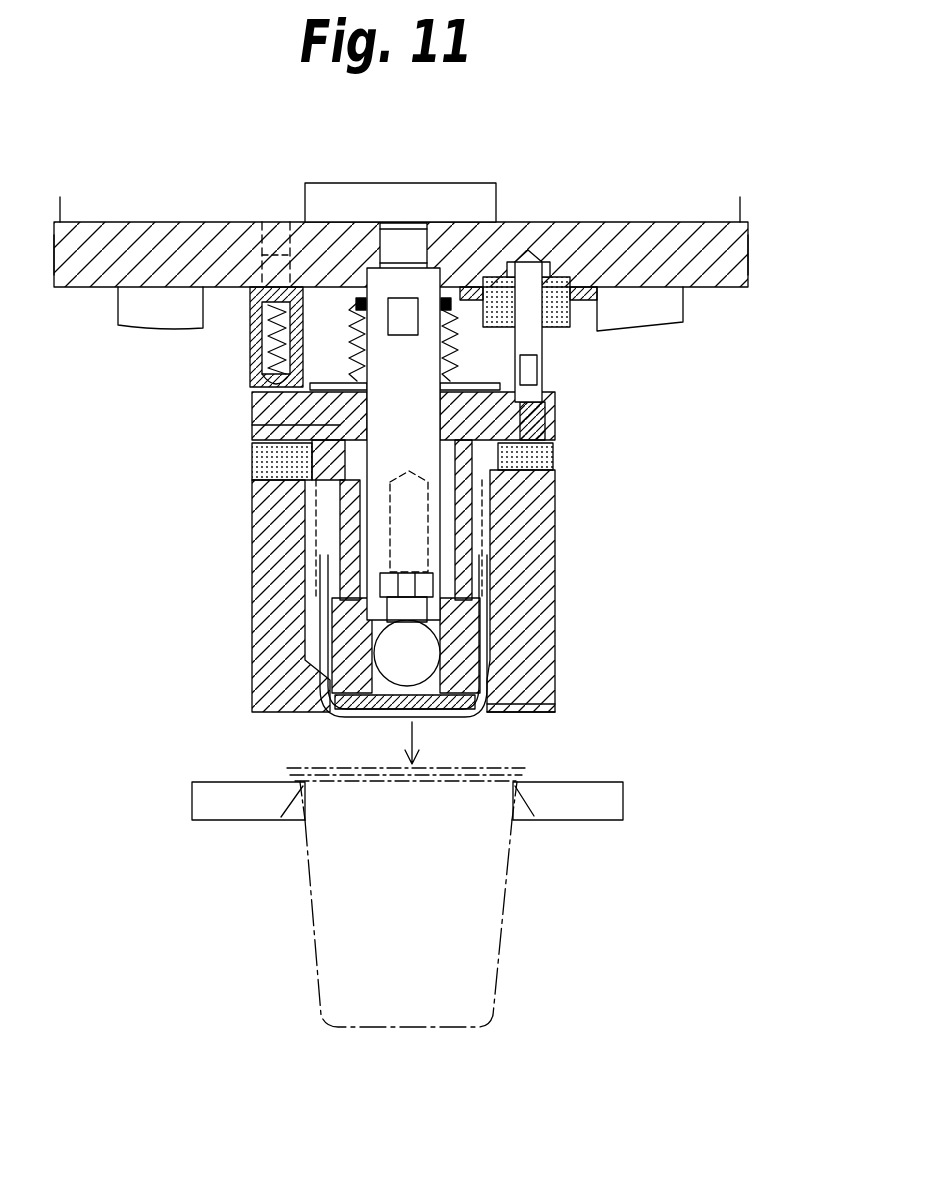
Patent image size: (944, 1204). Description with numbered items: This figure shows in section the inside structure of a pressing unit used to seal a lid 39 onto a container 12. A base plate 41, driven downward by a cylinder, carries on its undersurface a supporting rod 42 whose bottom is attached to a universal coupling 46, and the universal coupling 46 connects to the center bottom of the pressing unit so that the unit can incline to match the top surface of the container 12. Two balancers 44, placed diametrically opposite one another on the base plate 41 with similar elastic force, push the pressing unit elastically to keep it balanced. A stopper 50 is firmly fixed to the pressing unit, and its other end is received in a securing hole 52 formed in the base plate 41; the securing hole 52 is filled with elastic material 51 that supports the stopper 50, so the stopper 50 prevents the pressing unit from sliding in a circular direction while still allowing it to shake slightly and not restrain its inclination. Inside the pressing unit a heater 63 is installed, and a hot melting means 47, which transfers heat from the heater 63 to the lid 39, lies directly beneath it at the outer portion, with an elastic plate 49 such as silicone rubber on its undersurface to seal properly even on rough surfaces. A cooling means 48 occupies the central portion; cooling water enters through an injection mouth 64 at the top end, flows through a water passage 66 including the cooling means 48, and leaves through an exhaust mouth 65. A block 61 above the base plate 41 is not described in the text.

The container 12 is at (480, 933).
The lid 39 is at (297, 765).
The base plate 41 is at (537, 222).
The supporting rod 42 is at (392, 452).
The balancer 44 is at (250, 333).
The universal coupling 46 is at (410, 635).
The hot melting means 47 is at (535, 690).
The cooling means 48 is at (365, 702).
The elastic plate 49 is at (527, 705).
The stopper 50 is at (537, 347).
The elastic material 51 is at (565, 312).
The securing hole 52 is at (550, 322).
The support block 61 is at (445, 183).
The heater 63 is at (270, 568).
The injection mouth 64 is at (555, 410).
The exhaust mouth 65 is at (252, 412).
The water passage 66 is at (495, 518).